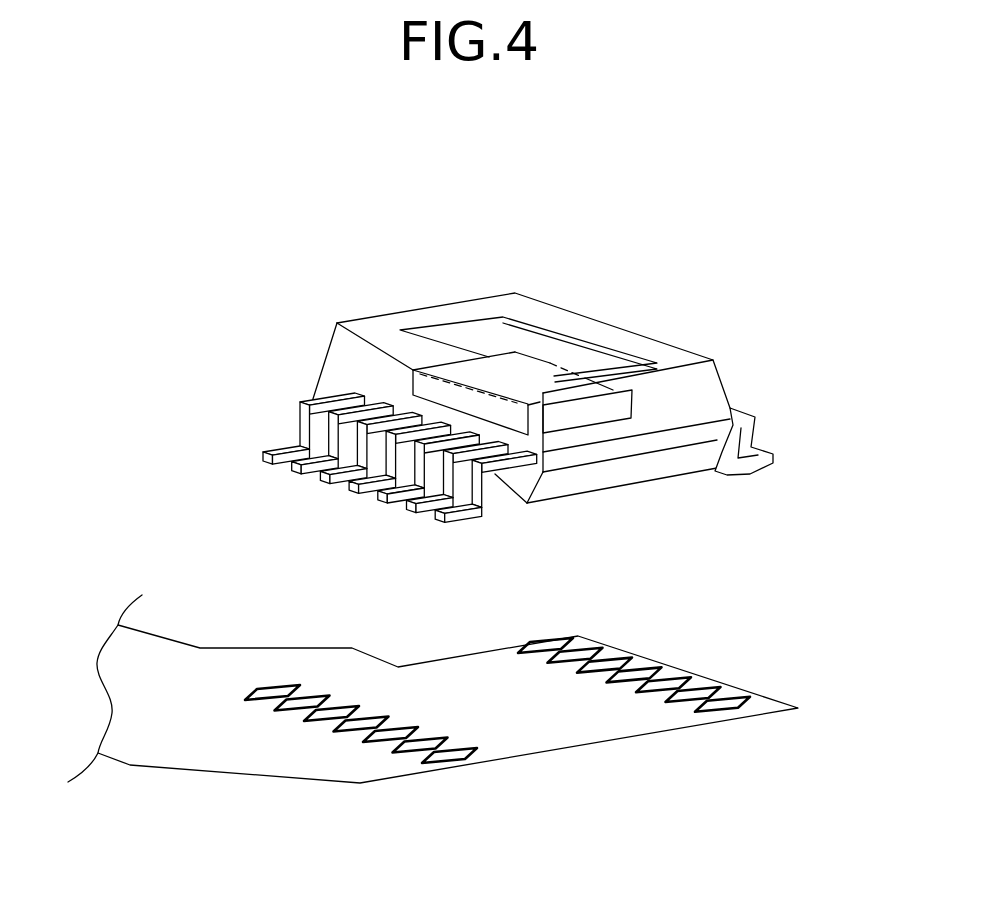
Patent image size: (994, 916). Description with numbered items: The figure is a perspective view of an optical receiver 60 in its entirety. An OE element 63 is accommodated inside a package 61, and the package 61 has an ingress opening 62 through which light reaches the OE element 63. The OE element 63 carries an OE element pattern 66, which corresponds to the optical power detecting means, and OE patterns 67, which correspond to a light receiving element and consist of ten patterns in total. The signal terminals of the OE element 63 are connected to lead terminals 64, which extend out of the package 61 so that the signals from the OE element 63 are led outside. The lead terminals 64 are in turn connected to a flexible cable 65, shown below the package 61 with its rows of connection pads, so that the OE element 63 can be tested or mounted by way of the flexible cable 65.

The optical receiver 60 is at (638, 230).
The package 61 is at (617, 487).
The ingress opening 62 is at (483, 335).
The OE element 63 is at (413, 370).
The lead terminals 64 is at (283, 444).
The flexible cable 65 is at (225, 652).
The OE element pattern 66 is at (476, 402).
The OE patterns 67 is at (513, 377).